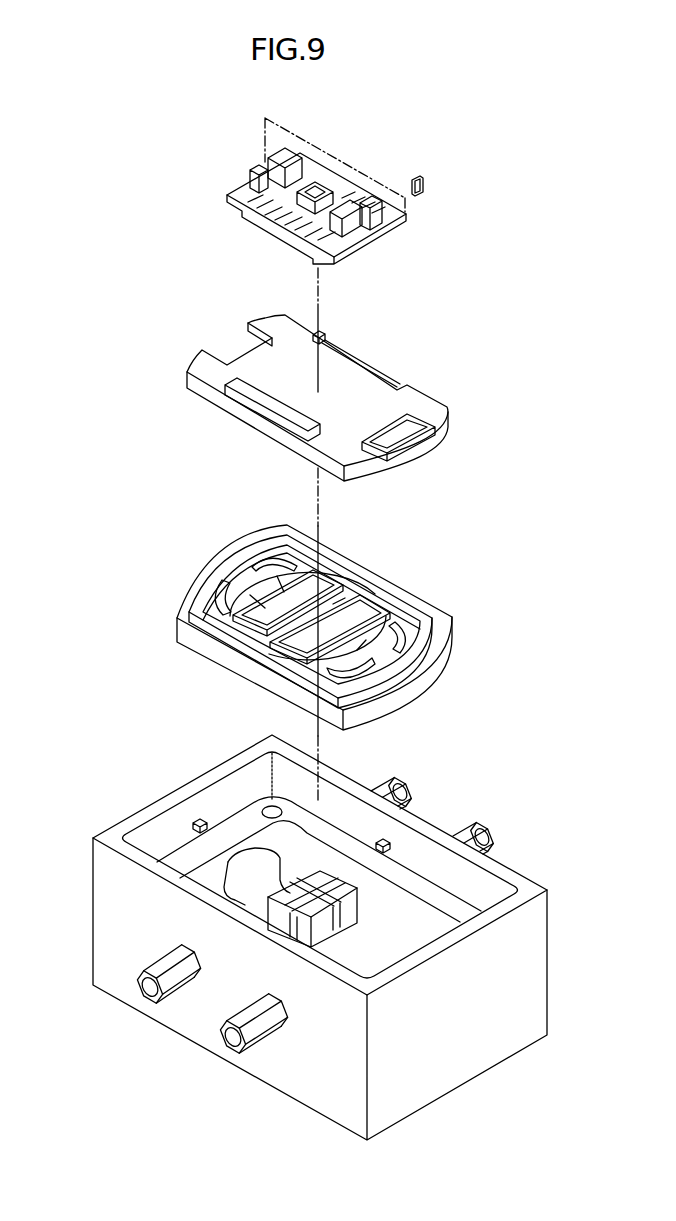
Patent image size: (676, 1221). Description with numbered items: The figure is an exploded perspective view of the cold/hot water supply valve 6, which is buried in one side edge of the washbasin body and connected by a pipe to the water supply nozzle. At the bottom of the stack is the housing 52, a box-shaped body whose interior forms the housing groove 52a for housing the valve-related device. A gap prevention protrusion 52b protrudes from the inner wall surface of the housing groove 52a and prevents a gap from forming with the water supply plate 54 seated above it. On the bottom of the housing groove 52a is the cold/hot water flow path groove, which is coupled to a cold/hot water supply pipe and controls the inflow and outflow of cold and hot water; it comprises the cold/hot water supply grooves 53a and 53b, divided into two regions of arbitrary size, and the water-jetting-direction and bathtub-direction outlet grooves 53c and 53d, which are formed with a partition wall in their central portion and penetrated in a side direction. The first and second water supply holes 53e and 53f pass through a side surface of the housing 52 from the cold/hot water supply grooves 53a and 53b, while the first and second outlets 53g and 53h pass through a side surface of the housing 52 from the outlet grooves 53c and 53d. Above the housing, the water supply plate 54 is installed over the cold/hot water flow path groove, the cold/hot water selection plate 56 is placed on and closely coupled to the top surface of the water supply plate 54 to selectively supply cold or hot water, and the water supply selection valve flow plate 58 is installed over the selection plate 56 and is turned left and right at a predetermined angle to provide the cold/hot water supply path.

The cold/hot water supply valve 6 is at (102, 518).
The housing 52 is at (507, 858).
The housing groove 52a is at (136, 840).
The gap prevention protrusion 52b is at (200, 822).
The cold/hot water supply groove 53a is at (403, 922).
The cold/hot water supply groove 53b is at (252, 893).
The water-jetting-direction outlet groove 53c is at (350, 905).
The bathtub-direction outlet groove 53d is at (313, 940).
The first water supply hole 53e is at (236, 1034).
The second water supply hole 53f is at (413, 792).
The first outlet 53g is at (151, 986).
The second outlet 53h is at (475, 830).
The water supply plate 54 is at (460, 598).
The cold/hot water selection plate 56 is at (410, 407).
The water supply selection valve flow plate 58 is at (373, 161).